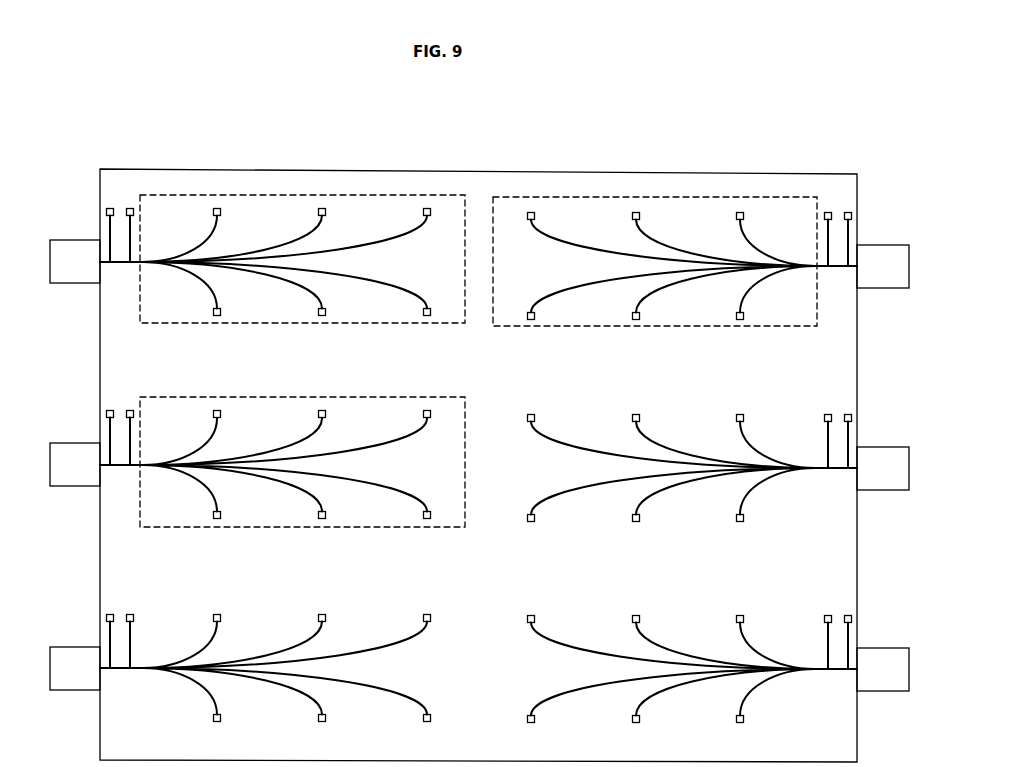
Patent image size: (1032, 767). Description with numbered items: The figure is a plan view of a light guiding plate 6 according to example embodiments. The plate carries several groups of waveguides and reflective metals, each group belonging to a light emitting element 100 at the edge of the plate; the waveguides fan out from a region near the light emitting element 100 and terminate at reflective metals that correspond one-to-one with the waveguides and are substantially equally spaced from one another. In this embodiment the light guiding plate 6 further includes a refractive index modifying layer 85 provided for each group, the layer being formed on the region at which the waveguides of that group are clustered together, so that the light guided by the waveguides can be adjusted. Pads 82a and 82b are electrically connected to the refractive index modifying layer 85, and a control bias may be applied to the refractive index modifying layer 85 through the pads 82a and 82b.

The light guiding plate 6 is at (829, 137).
The light emitting element 100 is at (82, 240).
The refractive index modifying layer 85 is at (118, 266).
The pad 82a is at (110, 207).
The pad 82b is at (130, 207).